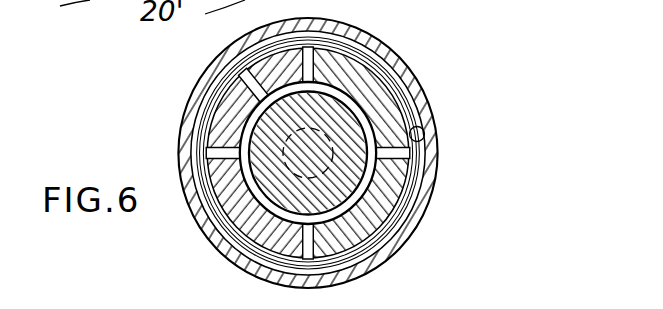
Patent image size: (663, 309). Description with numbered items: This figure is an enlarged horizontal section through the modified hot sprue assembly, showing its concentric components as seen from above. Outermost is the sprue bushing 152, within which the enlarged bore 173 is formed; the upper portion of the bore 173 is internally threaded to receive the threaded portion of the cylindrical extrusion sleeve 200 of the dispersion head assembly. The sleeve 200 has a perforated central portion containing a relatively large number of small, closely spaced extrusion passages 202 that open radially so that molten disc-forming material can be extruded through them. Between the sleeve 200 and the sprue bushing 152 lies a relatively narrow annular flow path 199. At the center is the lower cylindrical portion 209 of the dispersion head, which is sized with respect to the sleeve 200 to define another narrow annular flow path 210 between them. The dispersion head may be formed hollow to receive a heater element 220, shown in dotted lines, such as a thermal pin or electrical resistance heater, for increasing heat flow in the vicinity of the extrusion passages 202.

The sprue bushing 152 is at (414, 91).
The extrusion sleeve 200 is at (343, 70).
The extrusion passages 202 is at (310, 53).
The annular flow path 199 is at (402, 205).
The enlarged bore 173 is at (424, 141).
The annular flow path 210 is at (333, 219).
The lower cylindrical portion 209 is at (270, 190).
The heater element 220 is at (302, 130).